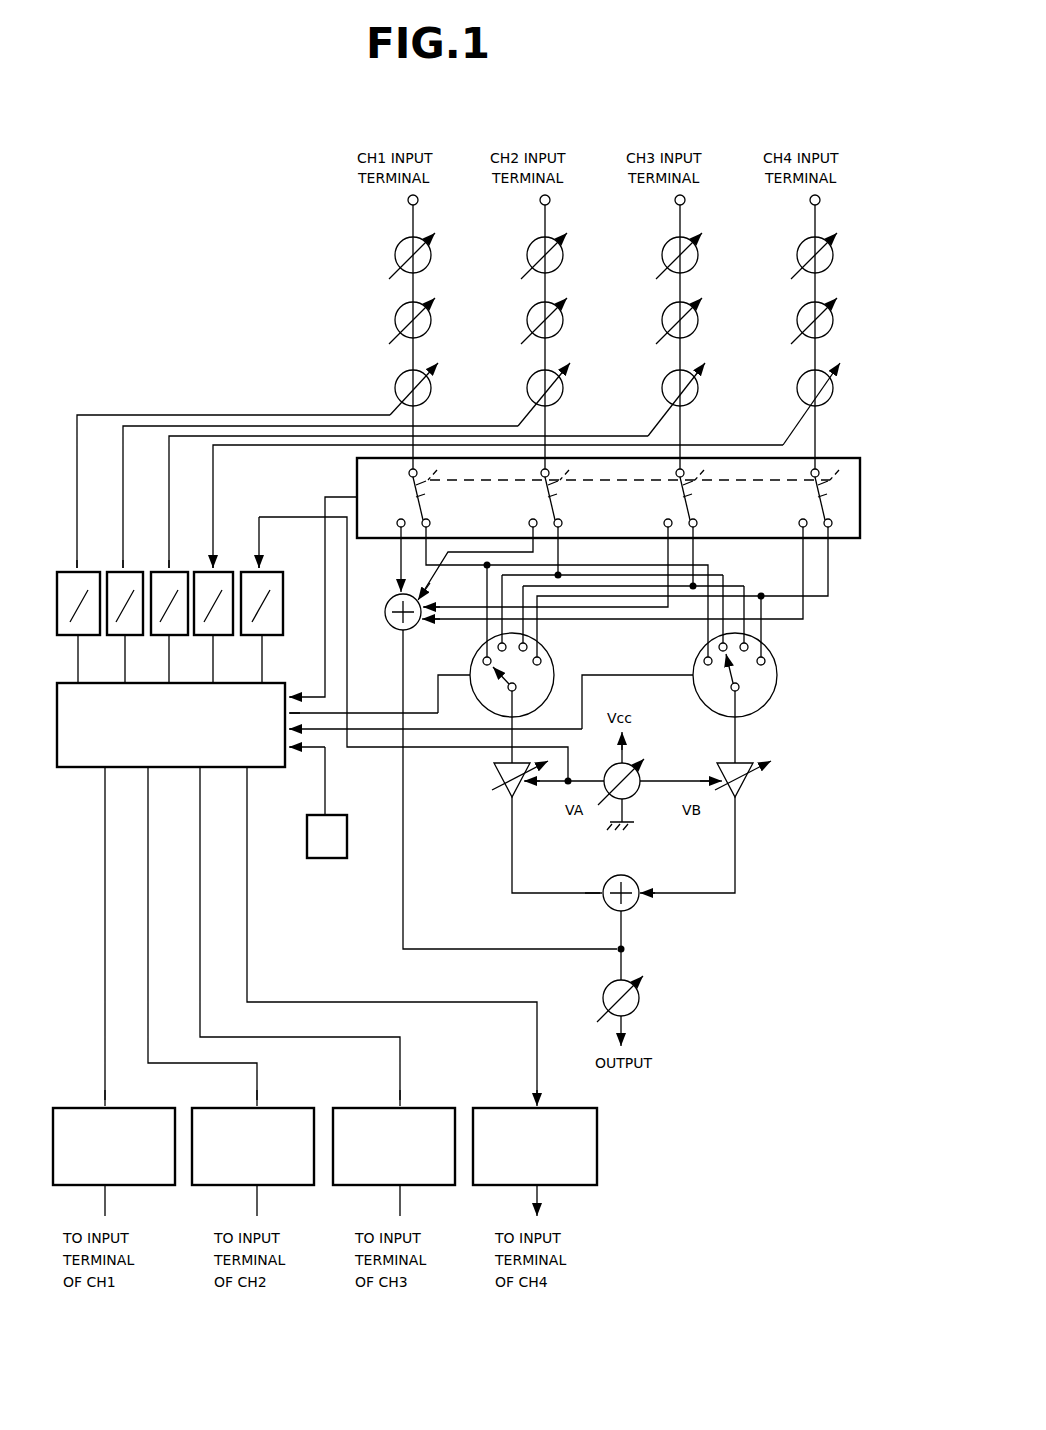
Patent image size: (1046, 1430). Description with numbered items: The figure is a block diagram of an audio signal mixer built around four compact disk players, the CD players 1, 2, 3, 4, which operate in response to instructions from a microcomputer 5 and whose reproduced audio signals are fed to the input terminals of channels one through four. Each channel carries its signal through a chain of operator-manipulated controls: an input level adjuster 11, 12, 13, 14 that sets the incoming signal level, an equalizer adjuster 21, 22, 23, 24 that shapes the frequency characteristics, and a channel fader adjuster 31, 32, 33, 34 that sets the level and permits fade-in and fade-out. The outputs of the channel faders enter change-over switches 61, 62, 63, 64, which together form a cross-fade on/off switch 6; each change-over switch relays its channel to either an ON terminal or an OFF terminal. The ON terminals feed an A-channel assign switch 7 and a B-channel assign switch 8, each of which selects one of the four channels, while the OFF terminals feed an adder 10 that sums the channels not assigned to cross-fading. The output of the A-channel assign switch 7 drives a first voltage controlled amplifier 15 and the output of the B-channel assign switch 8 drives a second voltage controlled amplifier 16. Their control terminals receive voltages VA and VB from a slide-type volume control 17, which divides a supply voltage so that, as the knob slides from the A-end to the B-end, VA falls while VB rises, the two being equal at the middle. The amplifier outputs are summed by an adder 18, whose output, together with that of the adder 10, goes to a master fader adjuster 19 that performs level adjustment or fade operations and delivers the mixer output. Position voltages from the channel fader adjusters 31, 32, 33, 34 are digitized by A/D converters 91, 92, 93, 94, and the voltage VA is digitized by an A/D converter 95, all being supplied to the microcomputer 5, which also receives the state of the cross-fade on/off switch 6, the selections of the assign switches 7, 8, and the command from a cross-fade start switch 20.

The CD player 1 is at (158, 1108).
The CD player 2 is at (296, 1108).
The CD player 3 is at (438, 1108).
The CD player 4 is at (558, 1108).
The microcomputer 5 is at (282, 684).
The cross-fade on/off switch 6 is at (578, 495).
The A-channel assign switch 7 is at (553, 666).
The B-channel assign switch 8 is at (775, 666).
The adder 10 is at (394, 600).
The input level adjuster 11 is at (398, 243).
The input level adjuster 12 is at (530, 243).
The input level adjuster 13 is at (665, 243).
The input level adjuster 14 is at (800, 243).
The first voltage controlled amplifier 15 is at (503, 796).
The second voltage controlled amplifier 16 is at (745, 792).
The slide-type volume control 17 is at (636, 799).
The adder 18 is at (637, 906).
The master fader adjuster 19 is at (638, 1010).
The cross-fade start switch 20 is at (325, 859).
The equalizer adjuster 21 is at (398, 308).
The equalizer adjuster 22 is at (530, 308).
The equalizer adjuster 23 is at (665, 308).
The equalizer adjuster 24 is at (800, 308).
The channel fader adjuster 31 is at (398, 376).
The channel fader adjuster 32 is at (530, 376).
The channel fader adjuster 33 is at (665, 376).
The channel fader adjuster 34 is at (800, 376).
The change-over switch 61 is at (430, 504).
The change-over switch 62 is at (562, 504).
The change-over switch 63 is at (697, 504).
The change-over switch 64 is at (810, 504).
The A/D converter 91 is at (90, 571).
The A/D converter 92 is at (136, 571).
The A/D converter 93 is at (182, 571).
The A/D converter 94 is at (226, 571).
The A/D converter 95 is at (278, 571).